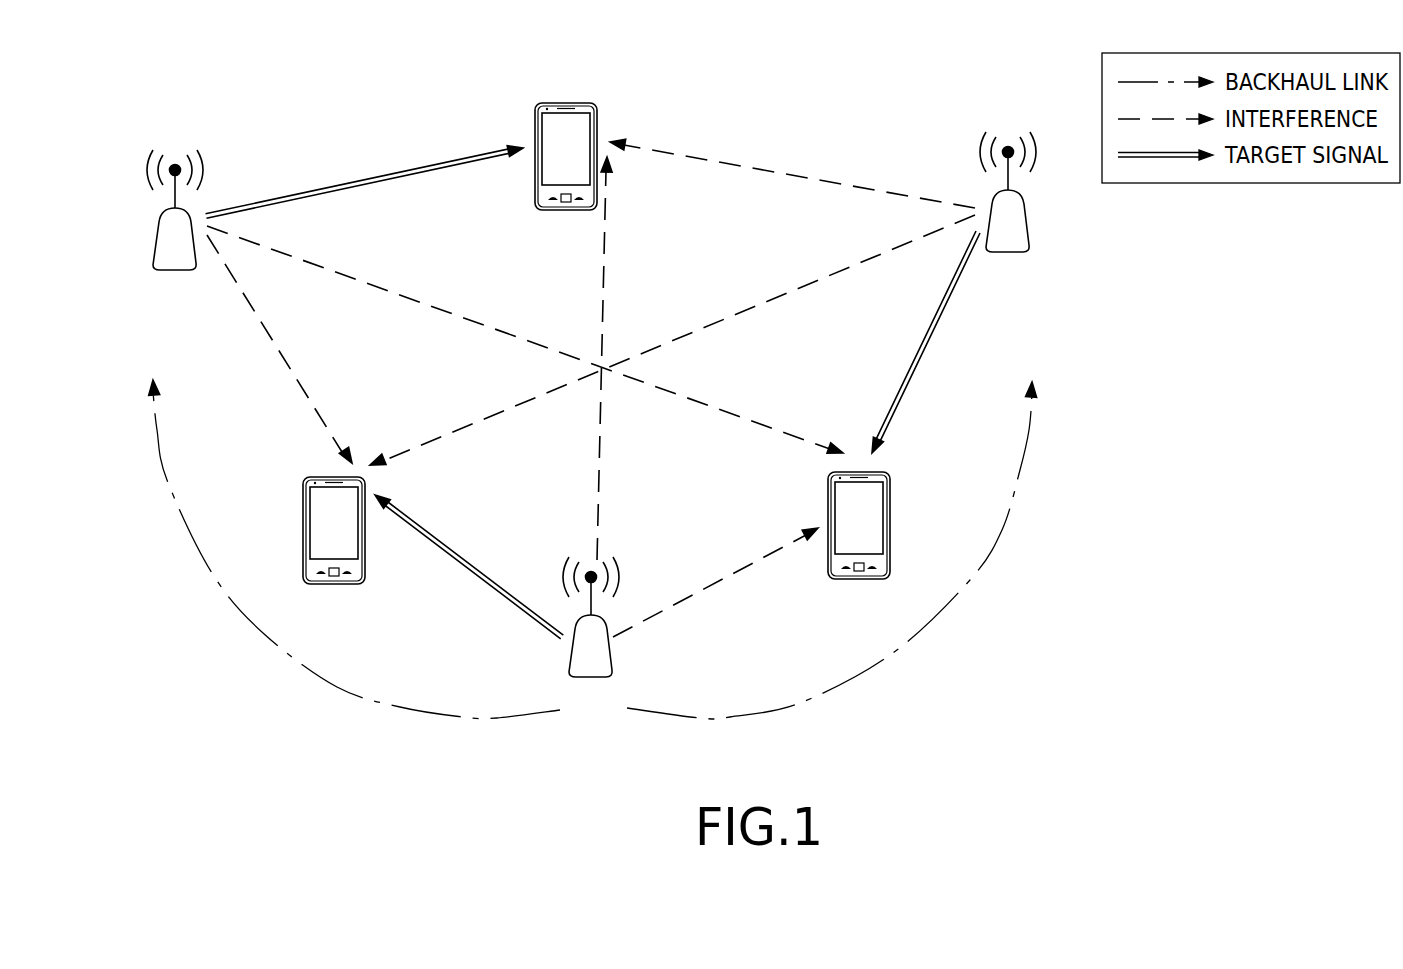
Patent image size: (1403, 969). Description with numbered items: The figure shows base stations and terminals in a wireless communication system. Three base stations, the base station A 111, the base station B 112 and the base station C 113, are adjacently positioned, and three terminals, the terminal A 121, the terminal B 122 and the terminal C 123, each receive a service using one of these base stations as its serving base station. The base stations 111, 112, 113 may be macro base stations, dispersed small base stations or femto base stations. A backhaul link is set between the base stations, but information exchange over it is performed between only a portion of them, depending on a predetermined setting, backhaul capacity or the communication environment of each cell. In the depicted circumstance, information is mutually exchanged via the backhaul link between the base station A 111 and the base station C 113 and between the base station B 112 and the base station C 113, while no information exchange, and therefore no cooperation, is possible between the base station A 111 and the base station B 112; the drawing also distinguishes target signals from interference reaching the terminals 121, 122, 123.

The base station A 111 is at (157, 261).
The base station B 112 is at (1025, 232).
The base station C 113 is at (611, 661).
The terminal A 121 is at (562, 211).
The terminal B 122 is at (891, 524).
The terminal C 123 is at (302, 527).